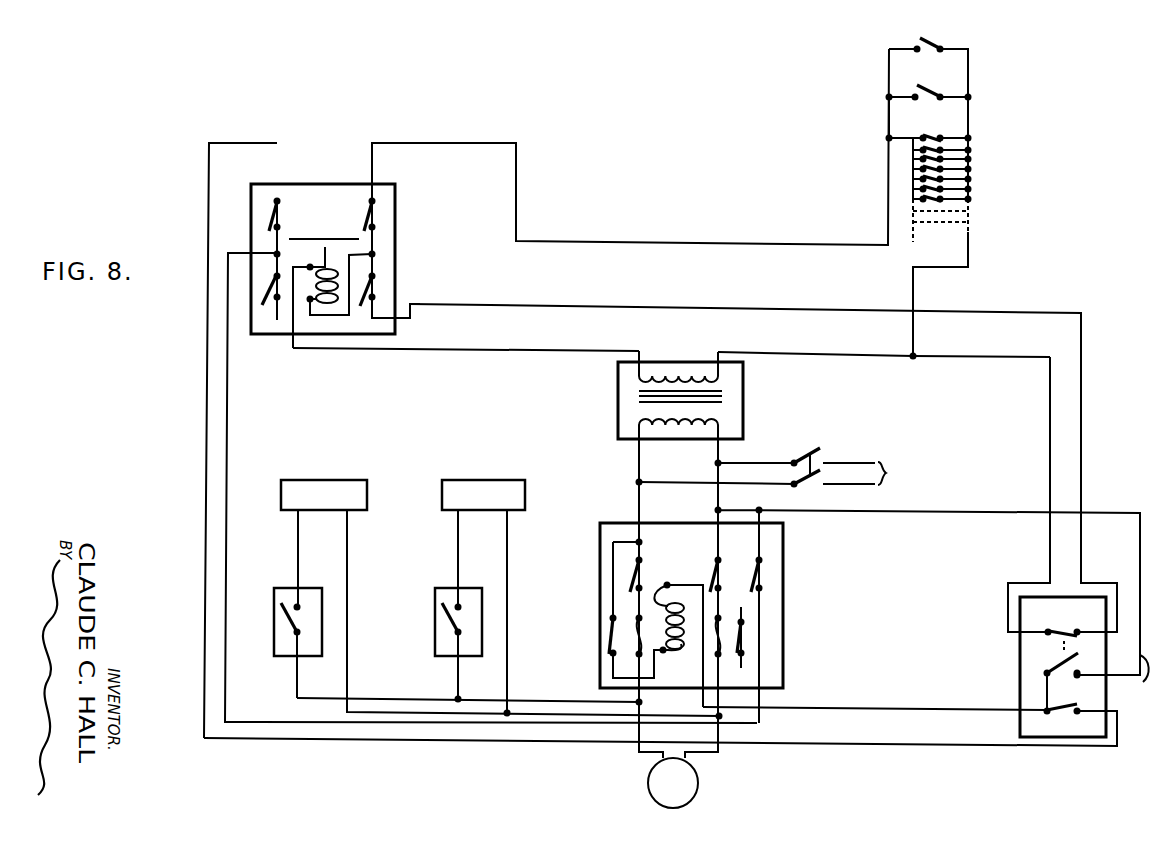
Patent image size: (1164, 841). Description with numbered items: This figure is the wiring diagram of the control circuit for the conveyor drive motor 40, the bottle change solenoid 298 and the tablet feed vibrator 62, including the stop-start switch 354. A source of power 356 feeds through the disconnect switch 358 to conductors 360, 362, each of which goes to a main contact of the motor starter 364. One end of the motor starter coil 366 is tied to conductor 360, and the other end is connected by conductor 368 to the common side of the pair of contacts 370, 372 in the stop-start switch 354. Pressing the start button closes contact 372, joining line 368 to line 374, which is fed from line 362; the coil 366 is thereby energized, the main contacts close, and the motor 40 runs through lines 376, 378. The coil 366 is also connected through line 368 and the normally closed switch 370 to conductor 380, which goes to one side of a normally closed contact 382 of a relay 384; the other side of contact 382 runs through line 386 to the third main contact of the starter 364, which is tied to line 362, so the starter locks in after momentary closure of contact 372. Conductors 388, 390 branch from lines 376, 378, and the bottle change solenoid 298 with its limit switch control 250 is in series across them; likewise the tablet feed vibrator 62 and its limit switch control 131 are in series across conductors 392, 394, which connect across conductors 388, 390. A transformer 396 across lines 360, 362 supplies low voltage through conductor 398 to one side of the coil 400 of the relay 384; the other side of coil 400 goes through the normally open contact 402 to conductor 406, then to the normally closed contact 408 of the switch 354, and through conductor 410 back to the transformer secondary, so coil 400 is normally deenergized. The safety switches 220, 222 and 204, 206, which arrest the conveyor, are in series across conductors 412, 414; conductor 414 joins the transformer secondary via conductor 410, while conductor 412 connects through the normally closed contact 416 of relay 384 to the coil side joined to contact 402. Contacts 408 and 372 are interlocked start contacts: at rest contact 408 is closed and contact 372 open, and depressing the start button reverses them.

The conveyor drive motor 40 is at (699, 784).
The tablet feed vibrator 62 is at (478, 486).
The limit switch control 131 is at (445, 596).
The safety switch 204 is at (940, 134).
The safety switch 206 is at (922, 137).
The safety switch 220 is at (927, 87).
The safety switch 222 is at (915, 51).
The limit switch control 250 is at (284, 596).
The bottle change solenoid 298 is at (320, 486).
The stop-start switch 354 is at (1019, 732).
The source of power 356 is at (871, 476).
The disconnect switch 358 is at (805, 455).
The conductor 360 is at (636, 505).
The conductor 362 is at (714, 500).
The motor starter 364 is at (786, 611).
The motor starter coil 366 is at (667, 585).
The conductor 368 is at (866, 708).
The normally closed contact 370 is at (1050, 705).
The start contact 372 is at (1058, 663).
The line 374 is at (1136, 679).
The line 376 is at (632, 699).
The line 378 is at (715, 714).
The conductor 380 is at (818, 744).
The normally closed contact 382 is at (268, 216).
The relay 384 is at (329, 184).
The line 386 is at (207, 357).
The conductor 388 is at (295, 680).
The conductor 390 is at (349, 657).
The conductor 392 is at (458, 674).
The conductor 394 is at (509, 657).
The transformer 396 is at (746, 394).
The conductor 398 is at (452, 350).
The relay coil 400 is at (325, 247).
The normally open contact 402 is at (393, 289).
The conductor 406 is at (630, 306).
The normally closed contact 408 is at (1058, 628).
The conductor 410 is at (1048, 481).
The conductor 412 is at (838, 244).
The conductor 414 is at (908, 293).
The normally closed contact 416 is at (390, 214).